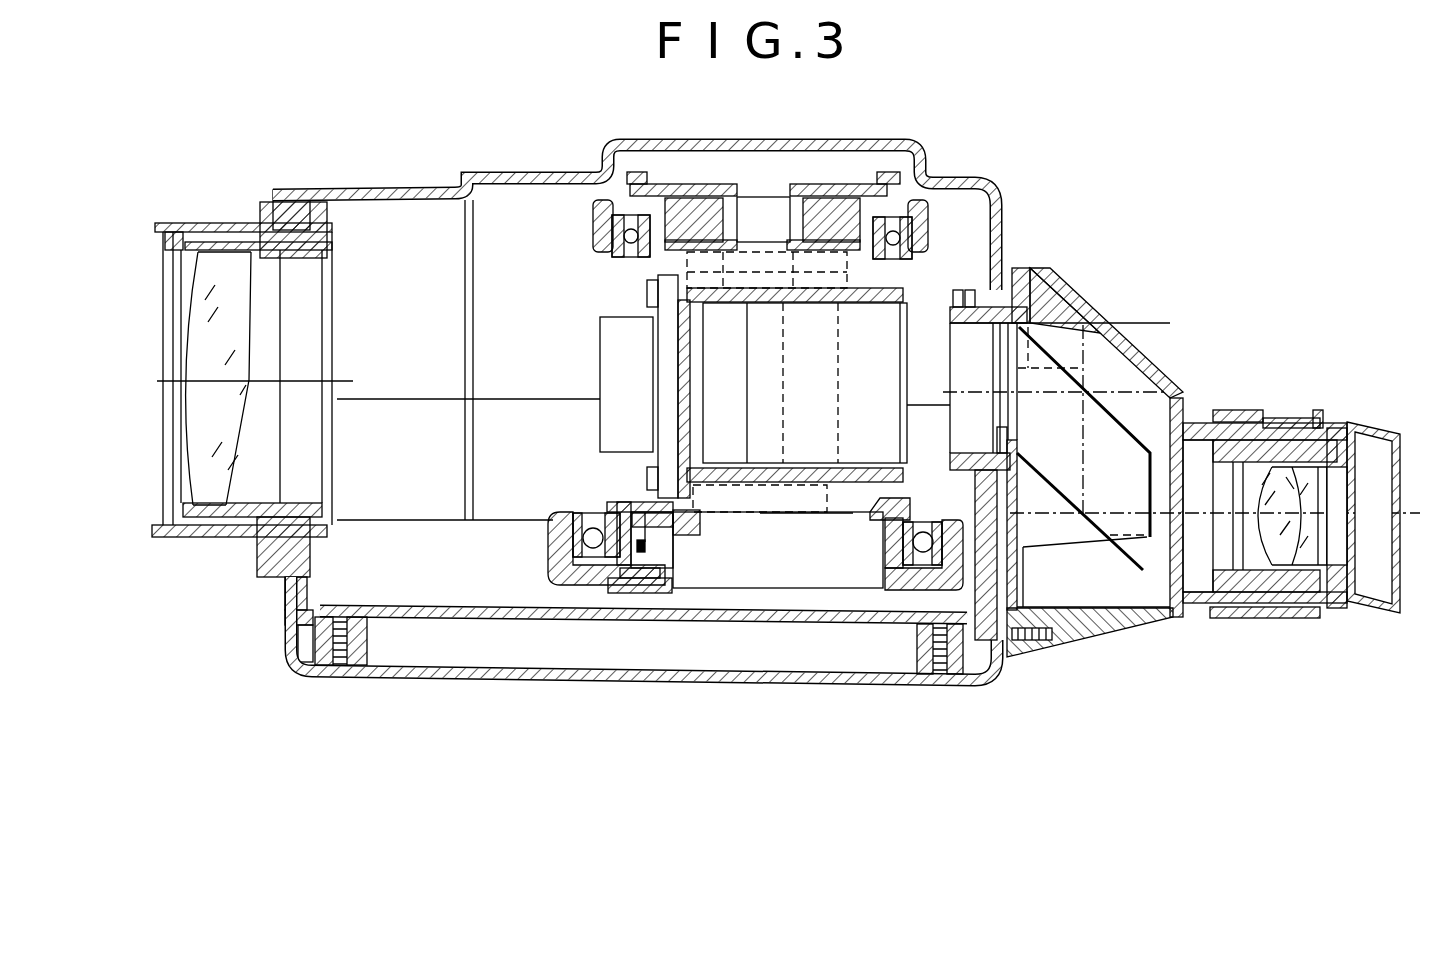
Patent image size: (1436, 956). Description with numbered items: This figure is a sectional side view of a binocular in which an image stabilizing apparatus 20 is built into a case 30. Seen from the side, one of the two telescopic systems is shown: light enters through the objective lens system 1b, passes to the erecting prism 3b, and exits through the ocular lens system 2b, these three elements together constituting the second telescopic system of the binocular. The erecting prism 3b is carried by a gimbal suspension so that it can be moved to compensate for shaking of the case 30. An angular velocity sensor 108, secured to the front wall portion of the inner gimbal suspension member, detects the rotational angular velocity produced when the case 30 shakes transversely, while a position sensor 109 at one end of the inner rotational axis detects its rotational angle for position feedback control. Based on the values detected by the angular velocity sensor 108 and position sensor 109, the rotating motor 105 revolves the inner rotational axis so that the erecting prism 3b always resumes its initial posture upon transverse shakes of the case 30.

The objective lens system 1b is at (199, 205).
The ocular lens system 2b is at (1283, 402).
The erecting prism 3b is at (890, 338).
The image stabilizing apparatus 20 is at (952, 228).
The case 30 is at (503, 172).
The rotating motor (torque motor) 105 is at (766, 208).
The angular velocity sensor 108 is at (610, 332).
The position sensor 109 is at (665, 557).